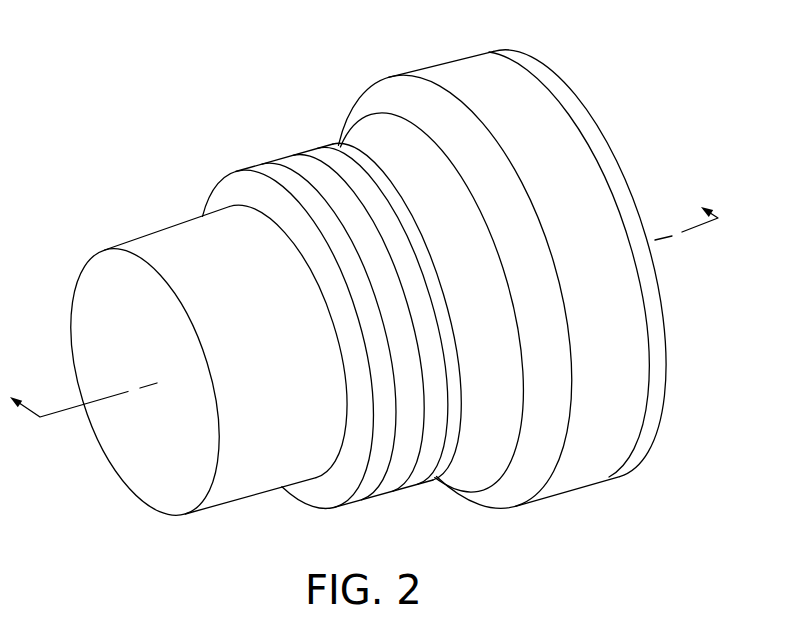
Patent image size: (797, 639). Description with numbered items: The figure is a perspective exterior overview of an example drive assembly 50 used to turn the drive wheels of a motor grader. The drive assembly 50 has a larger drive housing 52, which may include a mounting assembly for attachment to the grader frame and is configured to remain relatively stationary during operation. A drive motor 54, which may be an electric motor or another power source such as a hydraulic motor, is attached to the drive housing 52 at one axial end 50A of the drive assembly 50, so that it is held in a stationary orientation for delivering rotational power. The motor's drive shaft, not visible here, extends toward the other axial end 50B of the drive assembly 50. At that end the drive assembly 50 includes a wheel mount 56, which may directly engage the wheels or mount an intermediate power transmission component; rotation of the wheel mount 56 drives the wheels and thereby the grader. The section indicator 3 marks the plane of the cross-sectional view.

The drive assembly 50 is at (281, 100).
The axial end 50A is at (150, 463).
The axial end 50B is at (663, 387).
The drive housing 52 is at (238, 173).
The drive motor 54 is at (171, 255).
The wheel mount 56 is at (478, 78).
The section line 3- 3 is at (381, 325).